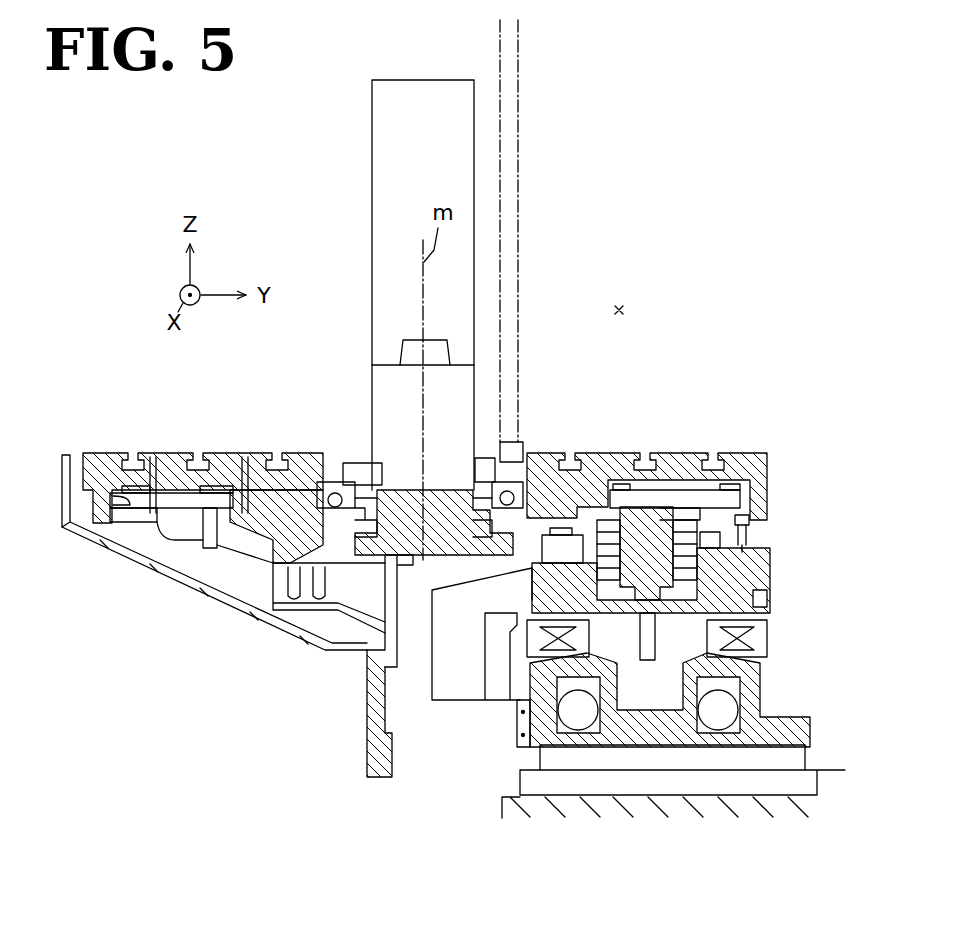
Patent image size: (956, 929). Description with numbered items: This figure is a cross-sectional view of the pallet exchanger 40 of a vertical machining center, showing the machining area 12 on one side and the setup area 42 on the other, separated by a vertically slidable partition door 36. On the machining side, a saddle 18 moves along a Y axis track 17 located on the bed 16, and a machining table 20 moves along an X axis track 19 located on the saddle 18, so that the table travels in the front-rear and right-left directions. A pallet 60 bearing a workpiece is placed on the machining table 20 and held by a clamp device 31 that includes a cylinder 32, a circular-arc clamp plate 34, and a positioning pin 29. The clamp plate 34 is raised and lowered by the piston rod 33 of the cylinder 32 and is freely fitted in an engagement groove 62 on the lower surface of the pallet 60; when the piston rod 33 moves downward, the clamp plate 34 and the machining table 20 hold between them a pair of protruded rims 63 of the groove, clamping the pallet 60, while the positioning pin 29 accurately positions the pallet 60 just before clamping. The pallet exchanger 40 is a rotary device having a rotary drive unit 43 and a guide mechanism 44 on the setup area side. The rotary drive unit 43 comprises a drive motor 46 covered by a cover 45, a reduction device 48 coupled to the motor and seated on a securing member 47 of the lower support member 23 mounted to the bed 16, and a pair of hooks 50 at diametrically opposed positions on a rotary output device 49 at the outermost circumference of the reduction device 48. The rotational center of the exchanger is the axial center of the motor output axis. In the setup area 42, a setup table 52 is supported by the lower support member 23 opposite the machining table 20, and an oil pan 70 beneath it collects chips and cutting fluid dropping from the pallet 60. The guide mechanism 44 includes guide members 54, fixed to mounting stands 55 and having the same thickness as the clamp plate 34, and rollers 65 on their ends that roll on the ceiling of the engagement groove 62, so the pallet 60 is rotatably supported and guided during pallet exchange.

The machining area 12 is at (618, 303).
The bed 16 is at (518, 797).
The Y axis track 17 is at (530, 768).
The saddle 18 is at (755, 686).
The X axis track 19 is at (765, 646).
The machining table 20 is at (752, 577).
The lower support member 23 is at (392, 763).
The positioning pin 29 is at (752, 526).
The clamp device 31 is at (672, 492).
The cylinder 32 is at (605, 520).
The piston rod 33 is at (650, 598).
The clamp plate 34 is at (650, 506).
The partition door 36 is at (520, 92).
The pallet exchanger 40 is at (293, 377).
The setup area 42 is at (282, 248).
The rotary drive unit 43 is at (364, 424).
The guide mechanism 44 is at (140, 536).
The cover 45 is at (372, 262).
The drive motor 46 is at (386, 380).
The securing member 47 is at (453, 555).
The reduction device 48 is at (418, 560).
The rotary output device 49 is at (380, 482).
The hooks 50 is at (348, 470).
The setup table 52 is at (268, 566).
The guide members 54 is at (186, 482).
The mounting stands 55 is at (162, 530).
The pallet 60 is at (100, 453).
The engagement groove 62 is at (132, 492).
The protruded rims 63 is at (115, 521).
The rollers 65 is at (155, 470).
The oil pan 70 is at (245, 614).